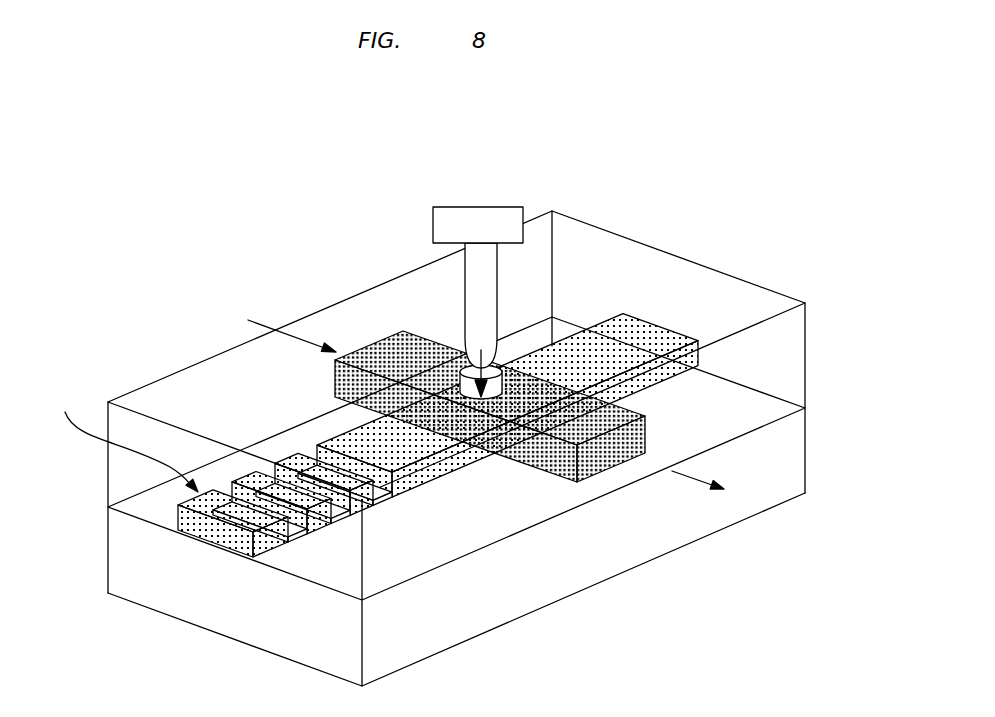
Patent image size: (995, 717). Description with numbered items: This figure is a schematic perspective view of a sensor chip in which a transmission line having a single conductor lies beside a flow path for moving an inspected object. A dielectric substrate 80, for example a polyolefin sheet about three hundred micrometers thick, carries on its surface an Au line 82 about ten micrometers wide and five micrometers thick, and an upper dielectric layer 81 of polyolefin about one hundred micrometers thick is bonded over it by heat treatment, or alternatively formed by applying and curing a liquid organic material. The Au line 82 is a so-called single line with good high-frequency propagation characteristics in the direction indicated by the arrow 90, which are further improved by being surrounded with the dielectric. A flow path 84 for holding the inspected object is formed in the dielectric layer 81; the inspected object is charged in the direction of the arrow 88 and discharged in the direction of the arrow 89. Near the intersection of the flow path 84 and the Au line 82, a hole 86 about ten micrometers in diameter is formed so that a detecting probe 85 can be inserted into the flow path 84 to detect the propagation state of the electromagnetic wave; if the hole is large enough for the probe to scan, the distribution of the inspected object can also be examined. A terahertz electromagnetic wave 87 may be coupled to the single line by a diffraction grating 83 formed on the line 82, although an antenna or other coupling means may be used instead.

The dielectric substrate 80 is at (722, 513).
The upper dielectric layer 81 is at (686, 278).
The Au line 82 is at (200, 532).
The diffraction grating 83 is at (297, 537).
The flow path 84 is at (382, 348).
The detecting probe 85 is at (473, 212).
The hole 86 is at (460, 350).
The terahertz electromagnetic wave 87 is at (124, 441).
The arrow 88 is at (293, 336).
The arrow 89 is at (688, 478).
The arrow 90 is at (372, 428).